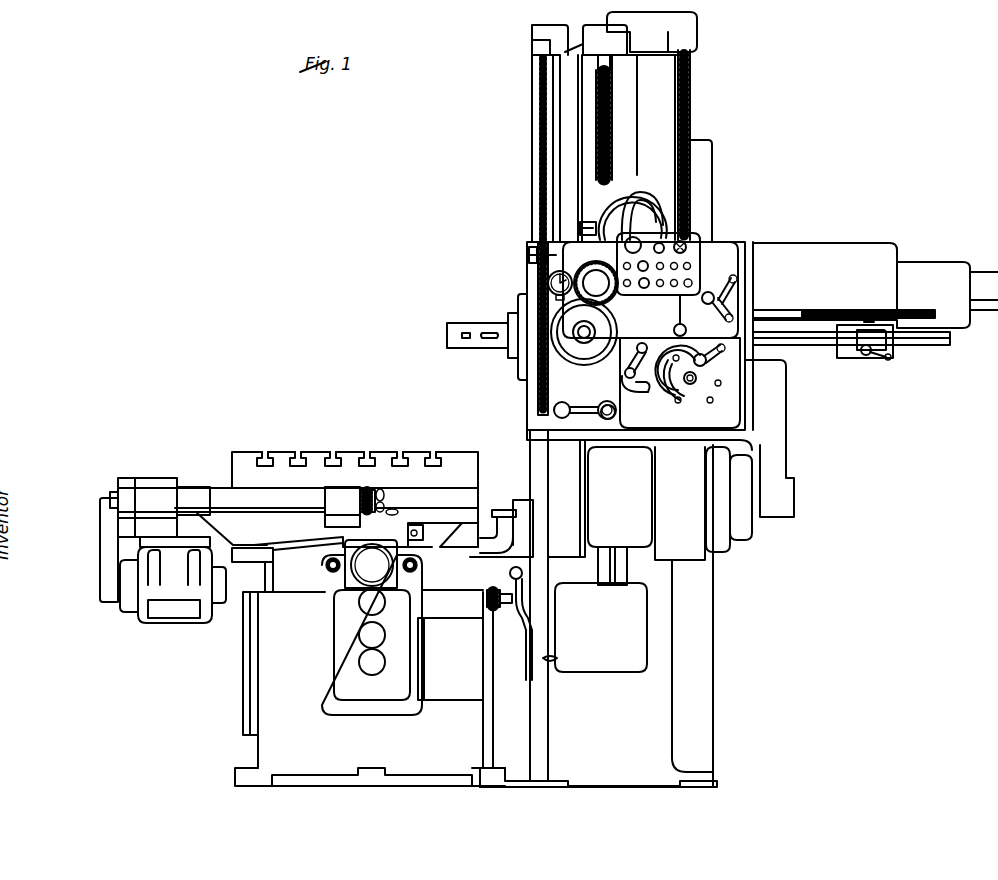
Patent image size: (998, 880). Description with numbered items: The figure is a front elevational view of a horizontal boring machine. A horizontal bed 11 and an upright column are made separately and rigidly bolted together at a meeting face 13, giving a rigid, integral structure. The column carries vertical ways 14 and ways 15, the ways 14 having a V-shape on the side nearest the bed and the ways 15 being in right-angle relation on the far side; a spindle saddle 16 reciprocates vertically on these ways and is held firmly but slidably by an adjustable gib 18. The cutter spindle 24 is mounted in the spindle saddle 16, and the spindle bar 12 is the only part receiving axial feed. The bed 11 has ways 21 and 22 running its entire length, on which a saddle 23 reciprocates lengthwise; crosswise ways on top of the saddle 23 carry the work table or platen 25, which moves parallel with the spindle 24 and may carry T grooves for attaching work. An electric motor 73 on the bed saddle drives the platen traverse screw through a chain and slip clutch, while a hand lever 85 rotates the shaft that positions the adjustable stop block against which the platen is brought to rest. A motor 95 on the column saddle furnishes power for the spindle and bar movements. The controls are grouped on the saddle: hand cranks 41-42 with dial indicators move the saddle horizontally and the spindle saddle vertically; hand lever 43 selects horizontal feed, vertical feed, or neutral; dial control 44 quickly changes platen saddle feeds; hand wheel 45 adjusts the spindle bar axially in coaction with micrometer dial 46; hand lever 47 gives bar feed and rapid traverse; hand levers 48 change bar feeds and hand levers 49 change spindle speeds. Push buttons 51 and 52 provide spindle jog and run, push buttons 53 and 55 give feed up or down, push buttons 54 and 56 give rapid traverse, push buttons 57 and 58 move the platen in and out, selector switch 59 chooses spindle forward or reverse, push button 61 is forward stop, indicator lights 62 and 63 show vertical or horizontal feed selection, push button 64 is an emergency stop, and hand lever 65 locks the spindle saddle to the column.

The bed 11 is at (265, 662).
The spindle bar 12 is at (705, 152).
The meeting face 13 is at (535, 706).
The column ways 14 is at (562, 128).
The column ways 15 is at (655, 88).
The spindle saddle 16 is at (522, 372).
The adjustable gib 18 is at (578, 237).
The bed way 21 is at (462, 548).
The bed way 22 is at (262, 545).
The saddle 23 is at (222, 490).
The cutter spindle 24 is at (447, 333).
The work table or platen 25 is at (245, 452).
The hand cranks 41-42 is at (528, 650).
The hand lever 43 is at (524, 573).
The dial control 44 is at (492, 616).
The hand wheel 45 is at (572, 360).
The micrometer dial 46 is at (584, 332).
The hand lever 47 is at (690, 330).
The hand levers 48 is at (712, 308).
The hand levers 49 is at (676, 388).
The push button 51 is at (622, 262).
The push button 52 is at (592, 300).
The push button 53 is at (684, 258).
The push button 54 is at (690, 266).
The push button 55 is at (644, 288).
The push button 56 is at (660, 290).
The push button 57 is at (690, 282).
The push button 58 is at (755, 262).
The selector switch 59 is at (690, 246).
The push button 61 is at (690, 212).
The indicator light 62 is at (636, 240).
The indicator light 63 is at (627, 290).
The push button 64 is at (625, 240).
The hand lever 65 is at (578, 418).
The electric motor 73 is at (160, 618).
The hand lever 85 is at (380, 495).
The motor 95 is at (670, 516).